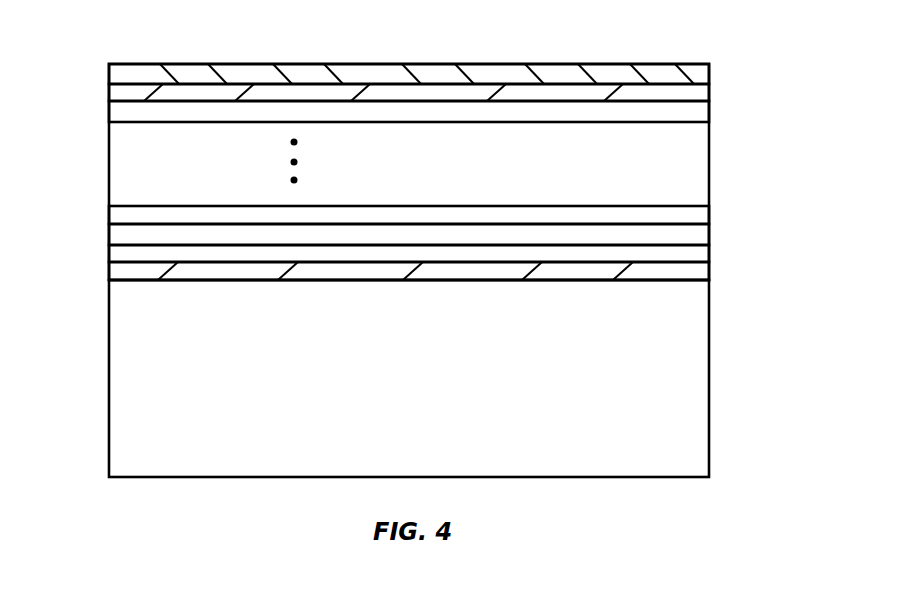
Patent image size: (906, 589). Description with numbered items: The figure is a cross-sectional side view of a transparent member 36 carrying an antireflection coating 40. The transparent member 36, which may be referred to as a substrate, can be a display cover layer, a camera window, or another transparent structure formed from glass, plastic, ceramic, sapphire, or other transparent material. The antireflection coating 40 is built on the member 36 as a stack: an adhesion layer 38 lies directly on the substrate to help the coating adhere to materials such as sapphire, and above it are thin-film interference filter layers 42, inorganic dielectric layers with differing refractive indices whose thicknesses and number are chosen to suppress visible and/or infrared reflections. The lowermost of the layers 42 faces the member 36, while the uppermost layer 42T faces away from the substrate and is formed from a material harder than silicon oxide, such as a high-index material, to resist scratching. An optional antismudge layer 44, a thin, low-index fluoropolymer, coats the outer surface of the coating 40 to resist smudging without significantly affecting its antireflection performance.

The transparent member 36 is at (697, 440).
The adhesion layer 38 is at (707, 272).
The antireflection coating 40 is at (88, 65).
The thin-film interference filter layers 42 is at (705, 253).
The uppermost thin-film interference filter layer 42T is at (707, 92).
The antismudge layer 44 is at (661, 70).